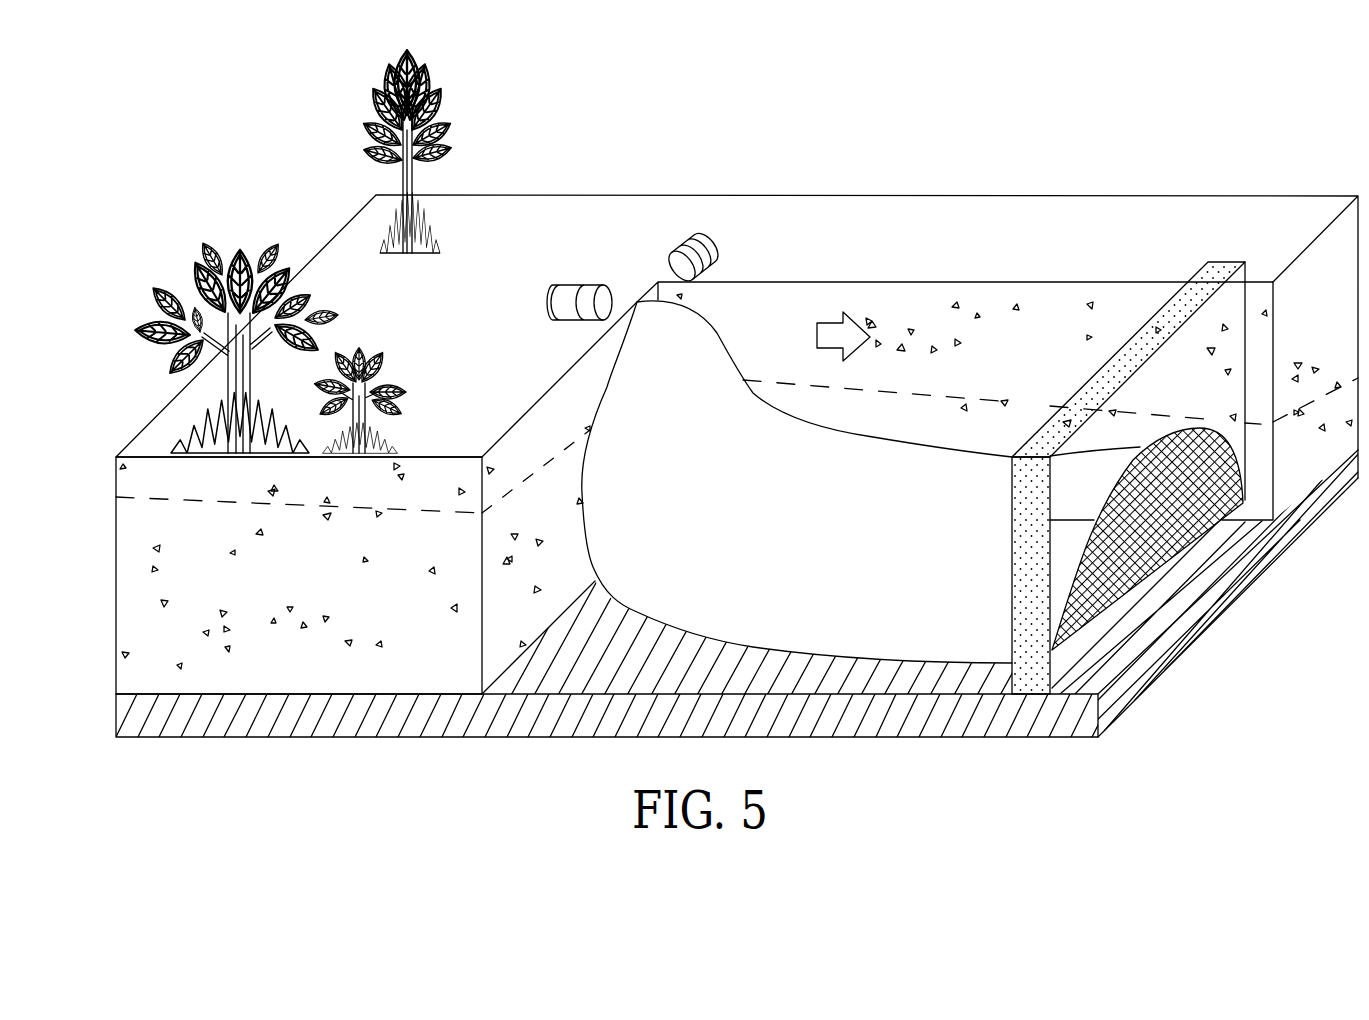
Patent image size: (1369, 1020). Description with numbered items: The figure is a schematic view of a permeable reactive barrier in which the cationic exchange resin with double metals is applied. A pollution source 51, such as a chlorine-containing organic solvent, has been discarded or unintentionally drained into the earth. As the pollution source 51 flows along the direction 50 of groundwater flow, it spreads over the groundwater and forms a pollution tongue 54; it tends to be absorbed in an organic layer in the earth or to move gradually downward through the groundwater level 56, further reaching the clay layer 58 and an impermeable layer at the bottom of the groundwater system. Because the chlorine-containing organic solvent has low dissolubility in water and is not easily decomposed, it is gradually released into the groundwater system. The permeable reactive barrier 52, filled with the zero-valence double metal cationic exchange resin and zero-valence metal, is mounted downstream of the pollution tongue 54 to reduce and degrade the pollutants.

The direction of groundwater flow 50 is at (833, 327).
The pollution source 51 is at (703, 238).
The filter barrier 52 is at (1224, 262).
The pollution tongue 54 is at (937, 648).
The groundwater level 56 is at (110, 490).
The clay layer 58 is at (112, 712).